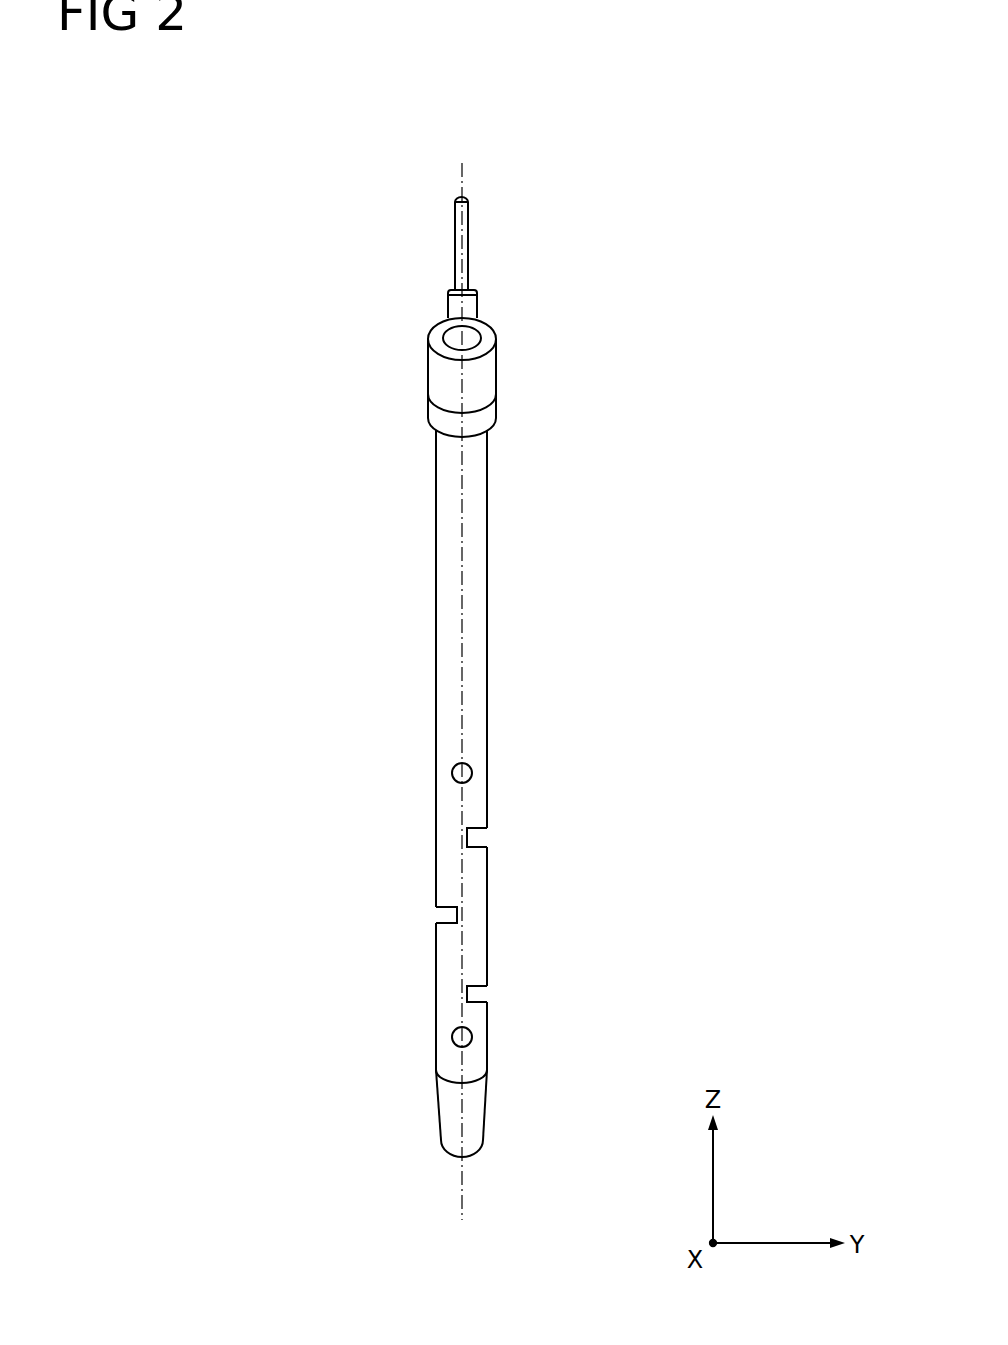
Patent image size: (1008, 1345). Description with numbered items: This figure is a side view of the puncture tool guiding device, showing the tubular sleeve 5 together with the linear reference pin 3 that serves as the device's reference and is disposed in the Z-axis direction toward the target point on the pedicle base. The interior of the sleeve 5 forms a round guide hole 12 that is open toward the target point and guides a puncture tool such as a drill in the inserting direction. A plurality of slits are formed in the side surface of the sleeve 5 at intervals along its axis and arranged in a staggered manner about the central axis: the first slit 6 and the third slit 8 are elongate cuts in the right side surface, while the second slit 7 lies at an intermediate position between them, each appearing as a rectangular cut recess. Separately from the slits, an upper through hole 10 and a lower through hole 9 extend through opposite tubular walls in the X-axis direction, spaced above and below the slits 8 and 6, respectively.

The reference pin 3 is at (469, 225).
The guide hole 12 is at (471, 337).
The sleeve 5 is at (473, 543).
The through hole 10 is at (472, 771).
The third slit 8 is at (478, 837).
The second slit 7 is at (444, 913).
The first slit 6 is at (480, 993).
The through hole 9 is at (472, 1036).